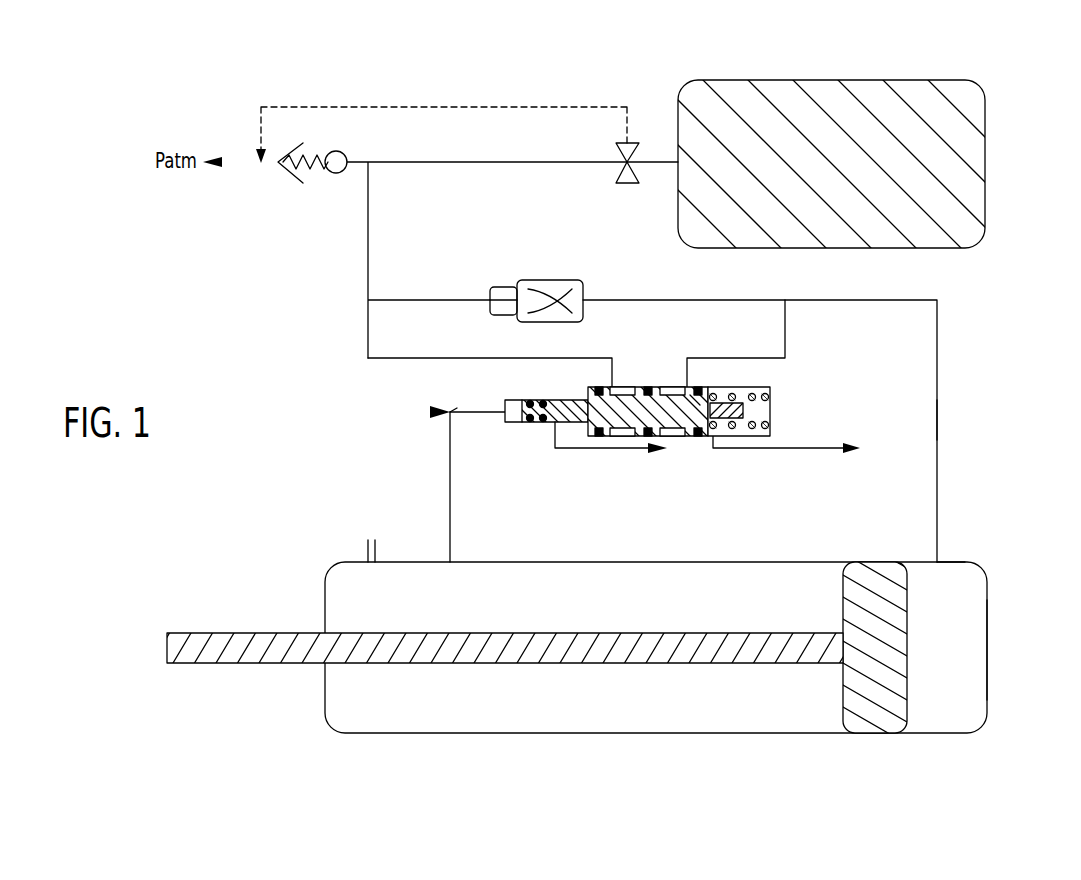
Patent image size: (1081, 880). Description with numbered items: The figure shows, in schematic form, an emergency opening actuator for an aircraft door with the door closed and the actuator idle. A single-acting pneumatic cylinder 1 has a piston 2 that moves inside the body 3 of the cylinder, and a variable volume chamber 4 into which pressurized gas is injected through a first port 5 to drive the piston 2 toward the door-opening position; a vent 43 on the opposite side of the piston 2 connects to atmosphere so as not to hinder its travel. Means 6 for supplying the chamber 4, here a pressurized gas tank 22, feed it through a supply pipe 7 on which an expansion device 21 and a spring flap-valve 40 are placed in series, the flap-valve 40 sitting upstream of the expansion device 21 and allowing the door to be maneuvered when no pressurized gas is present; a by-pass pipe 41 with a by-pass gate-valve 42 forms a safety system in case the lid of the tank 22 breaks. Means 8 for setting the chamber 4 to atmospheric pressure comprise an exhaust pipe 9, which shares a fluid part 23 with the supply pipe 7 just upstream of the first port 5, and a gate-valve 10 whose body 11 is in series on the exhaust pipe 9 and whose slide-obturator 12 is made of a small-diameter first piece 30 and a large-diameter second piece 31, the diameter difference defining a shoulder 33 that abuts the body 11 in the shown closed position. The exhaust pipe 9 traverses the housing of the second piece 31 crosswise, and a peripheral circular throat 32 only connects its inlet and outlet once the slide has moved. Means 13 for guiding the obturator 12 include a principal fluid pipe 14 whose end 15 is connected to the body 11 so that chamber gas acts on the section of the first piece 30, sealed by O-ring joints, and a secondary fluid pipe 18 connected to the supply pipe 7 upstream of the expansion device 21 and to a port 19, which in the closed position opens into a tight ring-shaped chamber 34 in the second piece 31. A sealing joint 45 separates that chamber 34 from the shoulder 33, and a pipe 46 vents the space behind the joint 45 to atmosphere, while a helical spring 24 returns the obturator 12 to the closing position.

The pneumatic cylinder 1 is at (605, 655).
The piston 2 is at (883, 722).
The body of the cylinder 3 is at (655, 735).
The variable volume chamber 4 is at (987, 662).
The first port 5 is at (950, 552).
The means for supplying the chamber with pressurized gas 6 is at (824, 124).
The supply pipe 7 is at (368, 268).
The means for setting the chamber to atmospheric pressure 8 is at (430, 412).
The pressurized gas exhaust pipe 9 is at (815, 445).
The gate-valve 10 is at (640, 406).
The body of the gate-valve 11 is at (515, 424).
The obturator 12 is at (660, 420).
The means for guiding the obturator 13 is at (445, 398).
The principal fluid pipe 14 is at (450, 515).
The end of the principal fluid pipe 15 is at (529, 421).
The secondary fluid pipe 18 is at (368, 340).
The port 19 is at (612, 386).
The expansion device 21 is at (550, 280).
The pressurized gas tank 22 is at (832, 80).
The shared fluid part 23 is at (937, 420).
The resilient resetting means 24 is at (757, 388).
The first piece 30 is at (568, 400).
The second piece 31 is at (680, 420).
The peripheral circular transverse throat 32 is at (670, 388).
The shoulder 33 is at (592, 432).
The mobile ring-shaped chamber 34 is at (625, 437).
The spring flap-valve 40 is at (348, 152).
The by-pass pipe 41 is at (313, 105).
The by-pass gate-valve 42 is at (633, 152).
The vent 43 is at (366, 548).
The sealing joint 45 is at (596, 388).
The pipe for setting to atmospheric pressure 46 is at (553, 438).